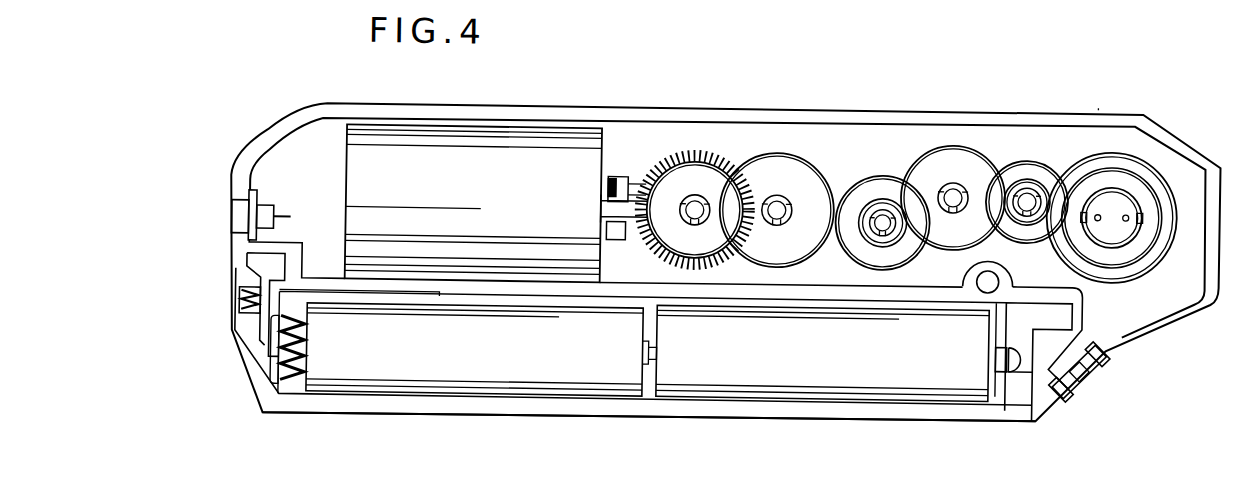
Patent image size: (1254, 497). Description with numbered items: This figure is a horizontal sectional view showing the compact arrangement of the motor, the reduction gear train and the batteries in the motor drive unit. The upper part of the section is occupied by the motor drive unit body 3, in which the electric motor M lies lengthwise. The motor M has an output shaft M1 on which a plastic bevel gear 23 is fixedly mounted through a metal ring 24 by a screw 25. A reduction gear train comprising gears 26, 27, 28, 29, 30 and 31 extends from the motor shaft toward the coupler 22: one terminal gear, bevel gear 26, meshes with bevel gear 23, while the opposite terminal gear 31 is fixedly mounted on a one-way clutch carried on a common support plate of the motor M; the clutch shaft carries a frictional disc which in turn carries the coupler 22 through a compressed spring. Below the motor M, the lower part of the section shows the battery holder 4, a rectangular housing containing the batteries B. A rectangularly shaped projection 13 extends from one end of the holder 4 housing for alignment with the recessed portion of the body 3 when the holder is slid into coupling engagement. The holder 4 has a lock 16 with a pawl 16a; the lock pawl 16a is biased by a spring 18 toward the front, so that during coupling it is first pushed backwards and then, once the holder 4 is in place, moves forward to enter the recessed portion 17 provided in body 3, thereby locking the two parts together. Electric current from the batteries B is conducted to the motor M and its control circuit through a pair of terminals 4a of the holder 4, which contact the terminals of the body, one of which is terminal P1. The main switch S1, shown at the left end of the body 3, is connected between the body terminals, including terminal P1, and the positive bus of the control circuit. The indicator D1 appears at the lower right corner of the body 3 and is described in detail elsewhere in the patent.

The electric motor M is at (490, 152).
The output shaft M1 is at (608, 215).
The main switch S1 is at (232, 222).
The lock 16 is at (240, 304).
The lock pawl 16a is at (247, 270).
The recessed portion 17 is at (238, 277).
The spring 18 is at (244, 318).
The bevel gear 23 is at (630, 186).
The metal ring 24 is at (617, 243).
The screw 25 is at (612, 181).
The bevel gear 26 is at (697, 172).
The gear 27 is at (781, 160).
The gear 28 is at (868, 188).
The gear 29 is at (953, 163).
The gear 30 is at (1048, 167).
The gear 31 is at (1112, 150).
The coupler 22 is at (1138, 204).
The motor drive unit body 3 is at (1044, 97).
The battery holder 4 is at (813, 461).
The terminals 4a is at (1012, 342).
The projection 13 is at (1075, 307).
The terminal P1 is at (1024, 368).
The indicator D1 is at (1094, 375).
The batteries B is at (586, 380).